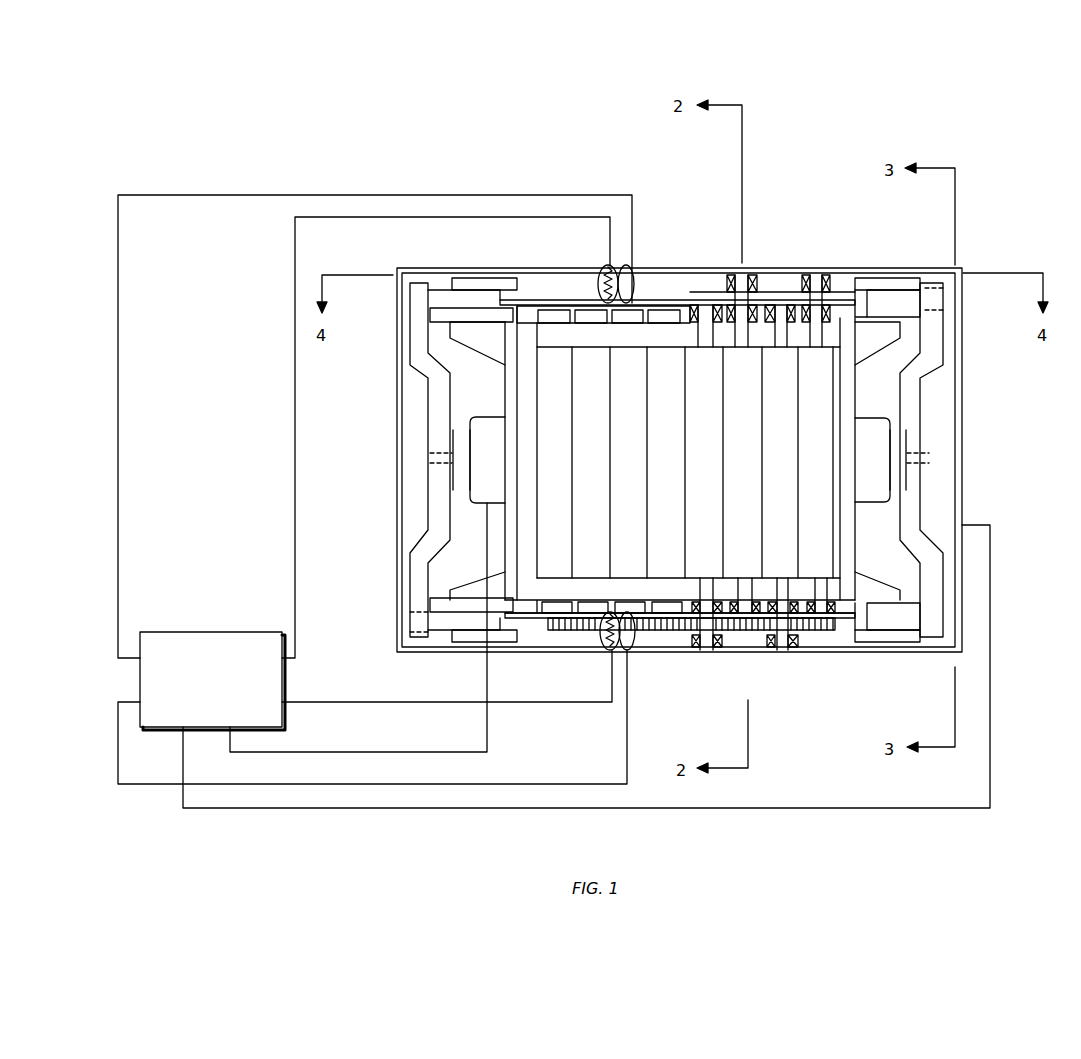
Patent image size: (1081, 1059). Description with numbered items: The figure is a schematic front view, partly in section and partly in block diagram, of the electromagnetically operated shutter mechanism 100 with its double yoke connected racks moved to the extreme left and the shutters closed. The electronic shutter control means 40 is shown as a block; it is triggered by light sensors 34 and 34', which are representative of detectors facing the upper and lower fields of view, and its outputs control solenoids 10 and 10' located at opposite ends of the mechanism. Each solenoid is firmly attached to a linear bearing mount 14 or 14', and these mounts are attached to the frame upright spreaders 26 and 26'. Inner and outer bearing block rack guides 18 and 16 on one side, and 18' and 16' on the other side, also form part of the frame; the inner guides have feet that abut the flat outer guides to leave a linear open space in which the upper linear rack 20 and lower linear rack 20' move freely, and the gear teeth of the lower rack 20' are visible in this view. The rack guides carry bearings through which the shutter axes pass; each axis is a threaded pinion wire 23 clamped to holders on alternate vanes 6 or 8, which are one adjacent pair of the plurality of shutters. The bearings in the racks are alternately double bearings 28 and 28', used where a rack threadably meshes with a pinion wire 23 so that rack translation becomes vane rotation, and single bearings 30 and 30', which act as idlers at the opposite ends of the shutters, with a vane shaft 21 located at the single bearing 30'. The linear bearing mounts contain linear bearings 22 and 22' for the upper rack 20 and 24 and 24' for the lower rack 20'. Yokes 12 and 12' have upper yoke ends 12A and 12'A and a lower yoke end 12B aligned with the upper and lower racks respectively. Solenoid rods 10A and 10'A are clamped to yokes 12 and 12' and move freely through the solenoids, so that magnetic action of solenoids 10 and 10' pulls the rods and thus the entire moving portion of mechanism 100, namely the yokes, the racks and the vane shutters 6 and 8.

The shutter mechanism 100 is at (832, 249).
The electronic shutter control means 40 is at (224, 702).
The yoke 12 is at (391, 460).
The upper yoke end 12A is at (417, 288).
The lower yoke end 12B is at (413, 640).
The linear bearing mount 14 is at (401, 431).
The solenoid 10 is at (420, 453).
The solenoid rod 10A is at (440, 453).
The linear bearing 22 is at (484, 263).
The upright spreader 26 is at (677, 249).
The linear bearing 24 is at (494, 686).
The inner bearing block rack guide 18 is at (678, 400).
The upper linear rack 20 is at (680, 380).
The vane 6 is at (711, 414).
The vane 8 is at (748, 414).
The light sensor 34 is at (647, 245).
The light sensor 34' is at (600, 647).
The single bearing 30 is at (772, 291).
The pinion wire 23 is at (742, 300).
The double bearing 28 is at (779, 274).
The outer bearing block rack guide 16 is at (816, 417).
The double bearing 28' is at (687, 614).
The lower linear rack 20' is at (691, 660).
The inner bearing block rack guide 18' is at (680, 655).
The vane shaft 21 is at (750, 622).
The outer bearing block rack guide 16' is at (789, 655).
The single bearing 30' is at (812, 681).
The linear bearing 22' is at (892, 273).
The upright spreader 26' is at (860, 274).
The linear bearing 24' is at (893, 649).
The yoke 12' is at (958, 460).
The upper yoke end 12'A is at (991, 273).
The linear bearing mount 14' is at (958, 425).
The solenoid 10' is at (939, 461).
The solenoid rod 10'A is at (945, 460).